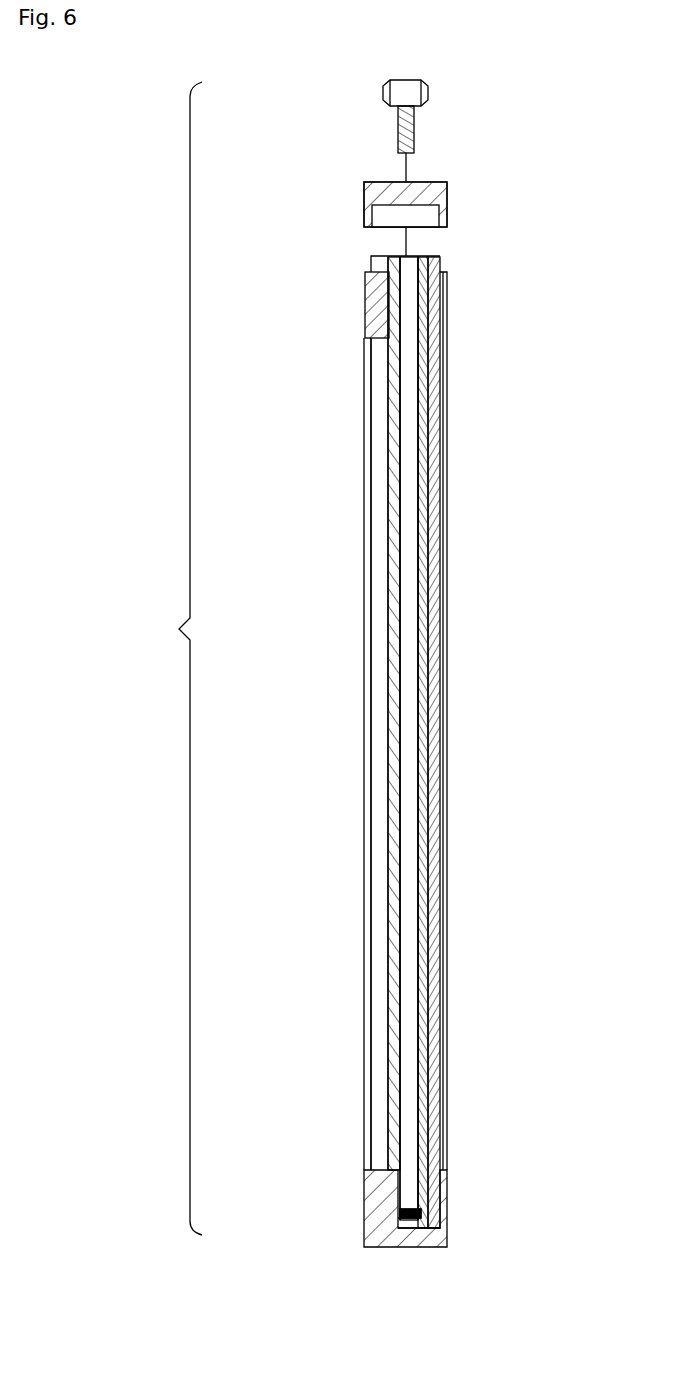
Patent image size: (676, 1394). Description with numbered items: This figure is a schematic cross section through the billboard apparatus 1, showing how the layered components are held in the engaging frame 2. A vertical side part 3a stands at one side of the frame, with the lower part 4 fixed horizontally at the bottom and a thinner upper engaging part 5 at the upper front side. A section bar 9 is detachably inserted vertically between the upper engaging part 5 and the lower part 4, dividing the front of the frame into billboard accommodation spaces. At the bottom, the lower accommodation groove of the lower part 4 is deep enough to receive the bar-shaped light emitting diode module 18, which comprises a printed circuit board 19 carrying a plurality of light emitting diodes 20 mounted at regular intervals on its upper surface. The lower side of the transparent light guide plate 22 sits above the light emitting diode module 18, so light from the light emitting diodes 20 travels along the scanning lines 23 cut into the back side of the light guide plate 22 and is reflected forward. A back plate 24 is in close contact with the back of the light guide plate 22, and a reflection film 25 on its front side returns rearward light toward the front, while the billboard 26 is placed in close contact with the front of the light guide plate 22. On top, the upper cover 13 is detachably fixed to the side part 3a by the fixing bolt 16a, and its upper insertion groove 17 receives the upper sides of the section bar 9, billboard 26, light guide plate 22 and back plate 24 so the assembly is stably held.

The solar cell module assembly 1 is at (181, 658).
The engaging frame 2 is at (366, 283).
The side part 3a is at (364, 775).
The lower part 4 is at (364, 1217).
The upper engaging part 5 is at (365, 316).
The section bar 9 is at (381, 357).
The upper cover 13 is at (364, 198).
The fixing bolt 16a is at (414, 112).
The upper insertion groove 17 is at (383, 219).
The light emitting diode module 18 is at (404, 1207).
The printed circuit board 19 is at (432, 1222).
The light emitting diodes 20 is at (435, 1217).
The light guide plate 22 is at (405, 516).
The scanning lines 23 is at (418, 525).
The back plate 24 is at (440, 330).
The reflection film 25 is at (430, 378).
The billboard 26 is at (388, 595).